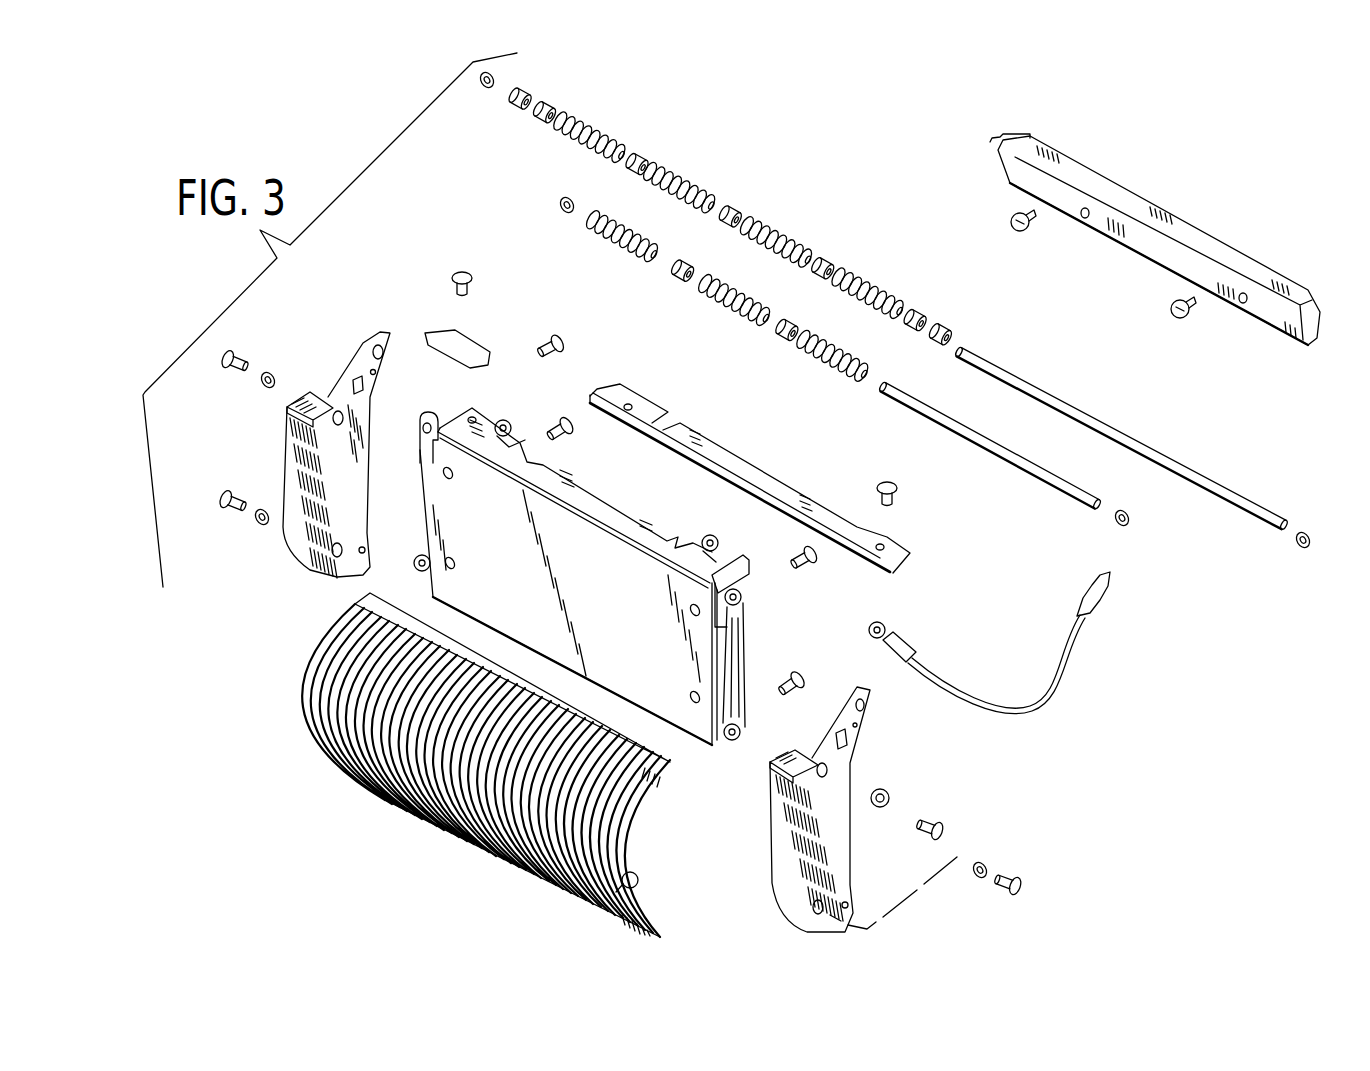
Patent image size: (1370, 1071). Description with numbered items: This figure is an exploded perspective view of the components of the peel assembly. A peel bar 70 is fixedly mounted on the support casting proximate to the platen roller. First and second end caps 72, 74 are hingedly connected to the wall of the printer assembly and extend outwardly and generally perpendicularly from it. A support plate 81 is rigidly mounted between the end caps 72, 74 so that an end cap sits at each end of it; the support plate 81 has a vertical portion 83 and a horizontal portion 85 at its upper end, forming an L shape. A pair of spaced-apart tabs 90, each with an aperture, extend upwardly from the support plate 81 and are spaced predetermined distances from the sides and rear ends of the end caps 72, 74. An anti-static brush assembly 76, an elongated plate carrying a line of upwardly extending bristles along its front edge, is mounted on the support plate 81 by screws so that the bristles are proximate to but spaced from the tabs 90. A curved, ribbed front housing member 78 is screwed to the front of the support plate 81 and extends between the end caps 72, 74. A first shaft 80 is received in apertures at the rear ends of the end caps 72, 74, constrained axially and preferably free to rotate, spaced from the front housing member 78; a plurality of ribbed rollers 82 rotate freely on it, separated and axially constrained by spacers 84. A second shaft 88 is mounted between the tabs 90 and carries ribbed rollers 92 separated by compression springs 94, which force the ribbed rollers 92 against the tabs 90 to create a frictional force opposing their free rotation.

The peel bar 70 is at (1255, 266).
The first end cap 72 is at (790, 878).
The second end cap 74 is at (297, 553).
The anti-static brush assembly 76 is at (785, 475).
The front housing member 78 is at (415, 783).
The first shaft 80 is at (1133, 445).
The support plate 81 is at (677, 667).
The ribbed rollers 82 is at (597, 121).
The vertical portion 83 is at (473, 582).
The spacers 84 is at (527, 83).
The horizontal portion 85 is at (597, 505).
The second shaft 88 is at (1035, 467).
The tabs 90 is at (517, 427).
The ribbed rollers 92 is at (623, 243).
The compression springs 94 is at (677, 271).